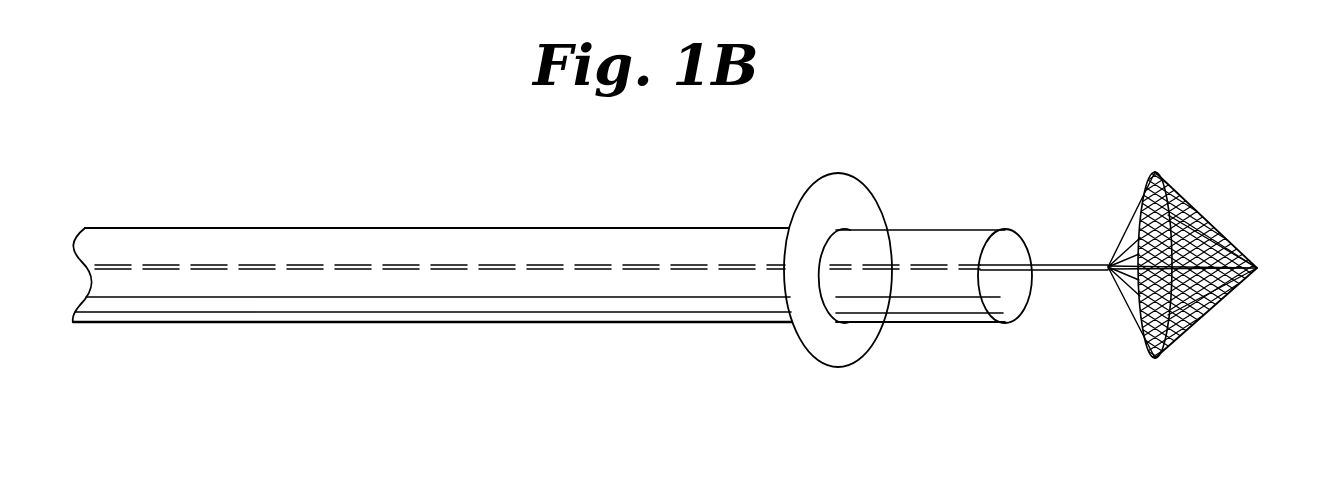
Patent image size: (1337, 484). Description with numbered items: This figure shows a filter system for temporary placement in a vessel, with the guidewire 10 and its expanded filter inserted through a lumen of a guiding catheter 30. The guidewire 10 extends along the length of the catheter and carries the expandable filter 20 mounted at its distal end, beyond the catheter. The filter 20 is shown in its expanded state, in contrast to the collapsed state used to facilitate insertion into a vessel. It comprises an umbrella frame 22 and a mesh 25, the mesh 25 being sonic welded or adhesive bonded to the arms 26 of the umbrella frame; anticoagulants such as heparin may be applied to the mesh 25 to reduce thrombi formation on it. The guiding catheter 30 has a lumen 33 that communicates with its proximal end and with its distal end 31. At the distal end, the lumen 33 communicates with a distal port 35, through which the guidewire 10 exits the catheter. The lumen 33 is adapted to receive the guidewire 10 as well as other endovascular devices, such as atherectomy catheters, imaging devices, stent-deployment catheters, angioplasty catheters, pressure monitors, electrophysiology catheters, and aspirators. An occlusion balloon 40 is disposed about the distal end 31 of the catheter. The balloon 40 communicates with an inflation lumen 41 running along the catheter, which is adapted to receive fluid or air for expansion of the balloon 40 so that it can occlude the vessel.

The guidewire 10 is at (590, 263).
The expandable filter 20 is at (1142, 257).
The umbrella frame 22 is at (1126, 210).
The mesh 25 is at (1208, 221).
The arms 26 is at (1125, 305).
The guiding catheter 30 is at (490, 226).
The distal end 31 is at (990, 330).
The lumen 33 is at (680, 240).
The distal port 35 is at (1003, 250).
The occlusion balloon 40 is at (842, 197).
The inflation lumen 41 is at (737, 316).